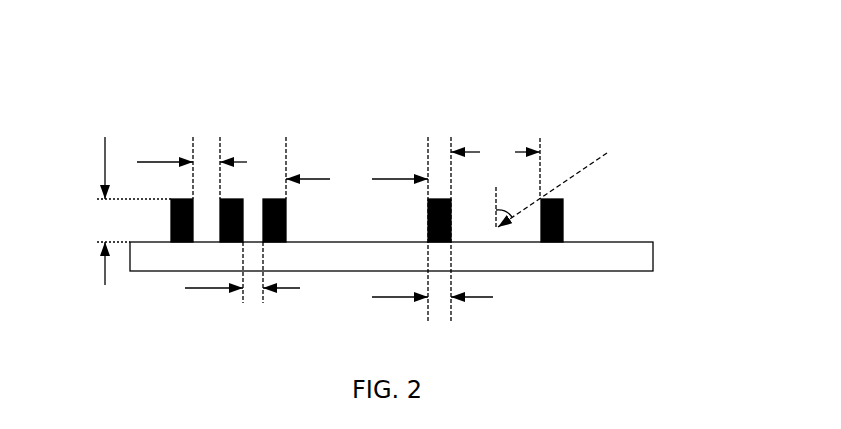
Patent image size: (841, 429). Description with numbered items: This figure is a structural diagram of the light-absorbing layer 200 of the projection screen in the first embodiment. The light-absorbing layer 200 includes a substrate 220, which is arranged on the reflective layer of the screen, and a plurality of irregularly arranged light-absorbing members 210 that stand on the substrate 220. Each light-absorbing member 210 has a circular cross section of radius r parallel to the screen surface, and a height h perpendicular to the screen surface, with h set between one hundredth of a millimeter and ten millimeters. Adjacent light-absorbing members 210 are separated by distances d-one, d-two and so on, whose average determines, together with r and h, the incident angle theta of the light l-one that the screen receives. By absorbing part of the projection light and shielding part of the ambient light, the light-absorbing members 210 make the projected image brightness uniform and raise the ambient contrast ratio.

The light-absorbing layer 200 is at (487, 96).
The light-absorbing member 210 is at (562, 220).
The substrate 220 is at (612, 253).